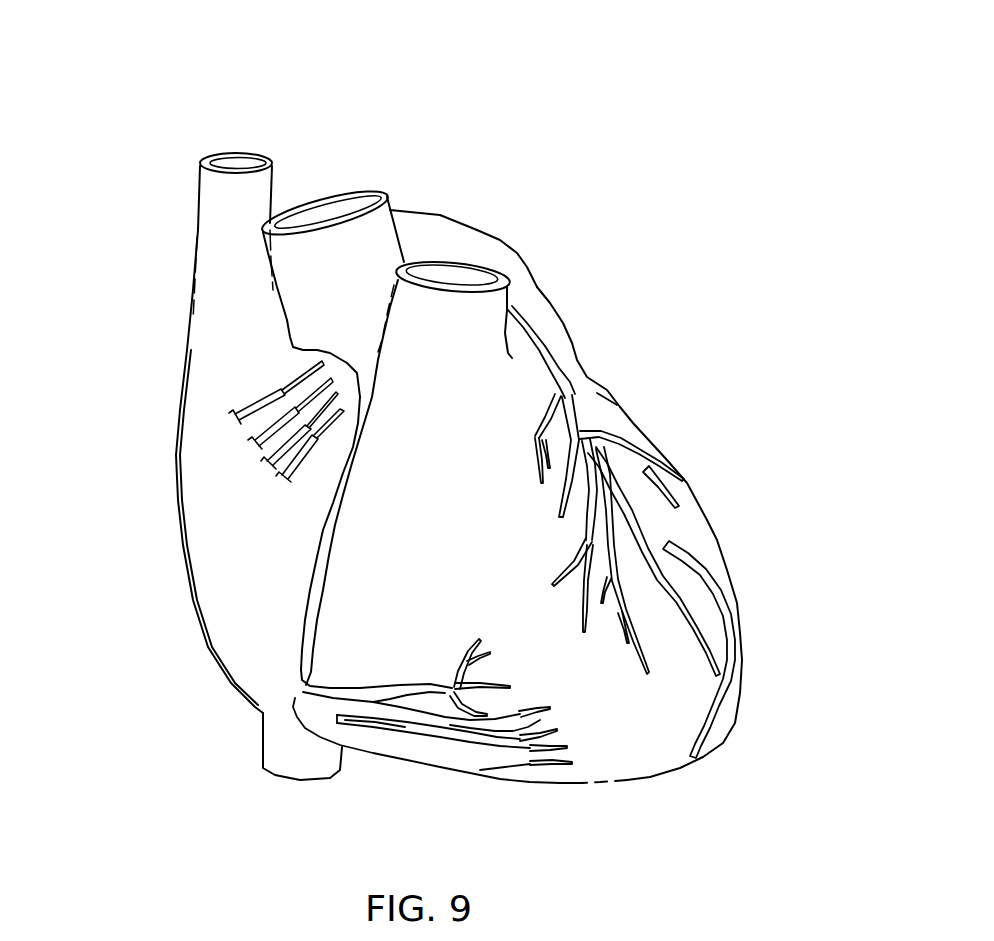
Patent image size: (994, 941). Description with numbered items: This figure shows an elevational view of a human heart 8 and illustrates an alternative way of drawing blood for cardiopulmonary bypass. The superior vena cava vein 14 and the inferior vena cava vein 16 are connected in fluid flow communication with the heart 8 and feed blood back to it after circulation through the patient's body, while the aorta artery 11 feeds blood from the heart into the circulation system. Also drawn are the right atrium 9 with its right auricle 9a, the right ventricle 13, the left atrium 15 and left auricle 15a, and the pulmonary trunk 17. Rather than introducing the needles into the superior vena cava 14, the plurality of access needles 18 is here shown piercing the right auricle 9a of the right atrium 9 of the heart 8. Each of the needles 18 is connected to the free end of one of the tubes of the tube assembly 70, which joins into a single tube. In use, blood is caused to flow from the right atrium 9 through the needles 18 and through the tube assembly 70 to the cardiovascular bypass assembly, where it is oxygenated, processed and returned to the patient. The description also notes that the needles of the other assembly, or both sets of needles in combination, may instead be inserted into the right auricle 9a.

The human heart 8 is at (629, 420).
The right atrium 9 is at (164, 531).
The right auricle 9a is at (230, 372).
The aorta artery 11 is at (344, 246).
The right ventricle 13 is at (561, 544).
The superior vena cava vein 14 is at (276, 237).
The left atrium 15 is at (463, 208).
The left auricle 15a is at (623, 347).
The inferior vena cava vein 16 is at (279, 792).
The pulmonary trunk 17 is at (461, 444).
The access needles 18 is at (320, 568).
The tube assembly 70 is at (219, 421).